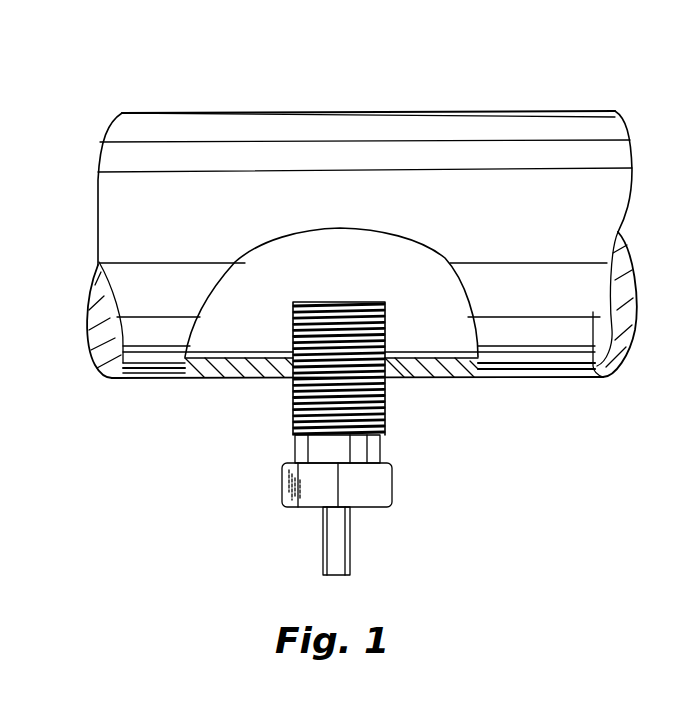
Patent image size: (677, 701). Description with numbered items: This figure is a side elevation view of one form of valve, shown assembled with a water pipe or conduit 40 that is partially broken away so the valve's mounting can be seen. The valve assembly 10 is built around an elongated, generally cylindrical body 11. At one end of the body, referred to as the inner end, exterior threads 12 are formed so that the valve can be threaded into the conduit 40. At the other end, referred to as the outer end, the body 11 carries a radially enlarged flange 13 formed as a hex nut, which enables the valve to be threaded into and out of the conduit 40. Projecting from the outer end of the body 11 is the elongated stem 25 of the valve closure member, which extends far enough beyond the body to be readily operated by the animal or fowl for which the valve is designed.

The water pipe or conduit 40 is at (398, 100).
The sensor assembly 10 is at (325, 438).
The exterior threads 12 is at (330, 383).
The body 11 is at (363, 453).
The radially enlarged flange 13 is at (375, 488).
The stem 25 is at (338, 554).